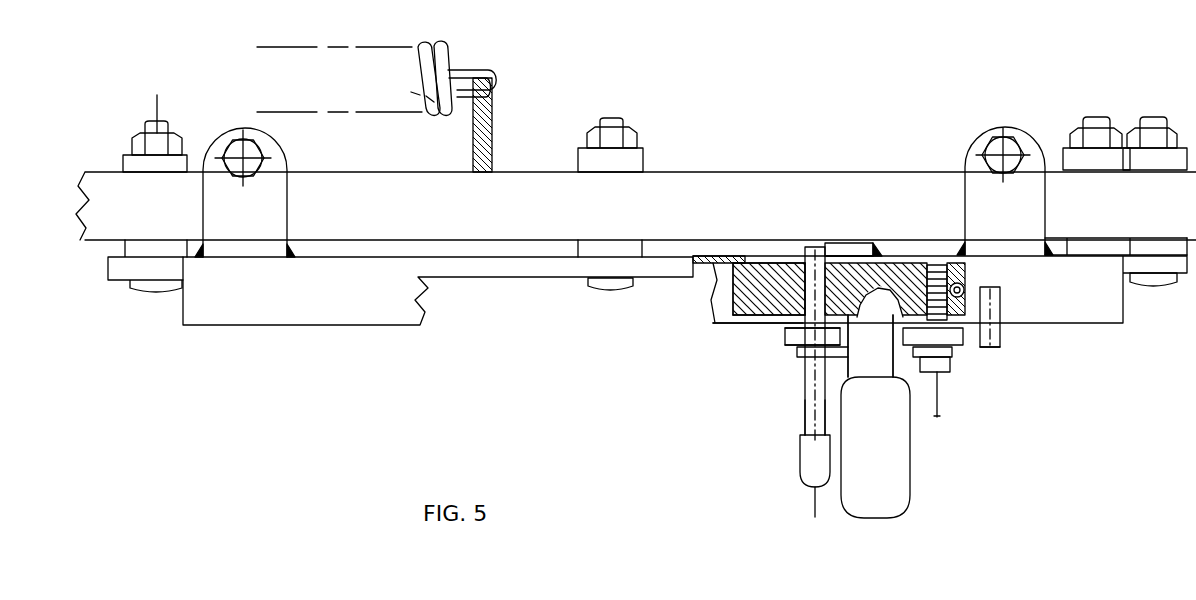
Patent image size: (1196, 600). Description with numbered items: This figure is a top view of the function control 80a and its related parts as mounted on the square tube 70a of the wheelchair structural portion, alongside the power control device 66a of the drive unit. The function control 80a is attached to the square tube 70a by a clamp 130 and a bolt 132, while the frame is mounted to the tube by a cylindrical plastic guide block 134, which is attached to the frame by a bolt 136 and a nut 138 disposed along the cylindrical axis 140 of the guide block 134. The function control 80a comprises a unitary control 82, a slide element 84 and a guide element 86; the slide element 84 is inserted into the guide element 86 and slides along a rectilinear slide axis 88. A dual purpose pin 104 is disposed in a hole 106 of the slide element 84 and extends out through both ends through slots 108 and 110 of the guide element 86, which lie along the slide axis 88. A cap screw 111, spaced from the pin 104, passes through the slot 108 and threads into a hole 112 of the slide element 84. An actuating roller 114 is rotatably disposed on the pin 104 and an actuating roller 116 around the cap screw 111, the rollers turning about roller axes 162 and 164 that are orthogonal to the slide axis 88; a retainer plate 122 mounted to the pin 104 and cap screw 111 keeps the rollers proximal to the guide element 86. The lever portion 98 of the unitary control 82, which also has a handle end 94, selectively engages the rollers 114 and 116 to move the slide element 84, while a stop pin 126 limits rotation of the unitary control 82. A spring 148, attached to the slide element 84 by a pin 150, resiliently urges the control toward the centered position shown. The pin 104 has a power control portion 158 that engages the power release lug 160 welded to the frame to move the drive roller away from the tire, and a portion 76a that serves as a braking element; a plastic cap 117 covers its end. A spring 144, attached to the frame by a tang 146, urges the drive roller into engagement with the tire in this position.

The square tube 70a is at (395, 219).
The power control device 66a is at (503, 316).
The spring 144 is at (450, 56).
The tang 146 is at (492, 118).
The cylindrical axis 140 is at (152, 96).
The nut 138 is at (134, 138).
The guide block 134 is at (124, 166).
The bolt 136 is at (155, 293).
The clamp 130 is at (270, 135).
The bolt 132 is at (241, 140).
The slide axis 88 is at (1065, 287).
The slide element 84 is at (710, 303).
The guide element 86 is at (725, 325).
The slot 108 is at (755, 325).
The slot 110 is at (757, 262).
The hole 106 is at (783, 263).
The power control portion 158 is at (850, 244).
The power release lug 160 is at (873, 250).
The hole 112 is at (935, 263).
The lever portion 98 is at (872, 342).
The pin 150 is at (958, 285).
The spring 148 is at (992, 277).
The stop pin 126 is at (1000, 335).
The actuating roller 114 is at (783, 340).
The retainer plate 122 is at (795, 352).
The actuating roller 116 is at (965, 352).
The cap screw 111 is at (940, 395).
The roller axis 164 is at (940, 420).
The unitary control 82 is at (907, 516).
The handle end 94 is at (880, 519).
The braking element 76a is at (805, 422).
The plastic cap 117 is at (800, 478).
The roller axis 162 is at (815, 510).
The dual purpose pin 104 is at (767, 417).
The function control 80a is at (733, 523).